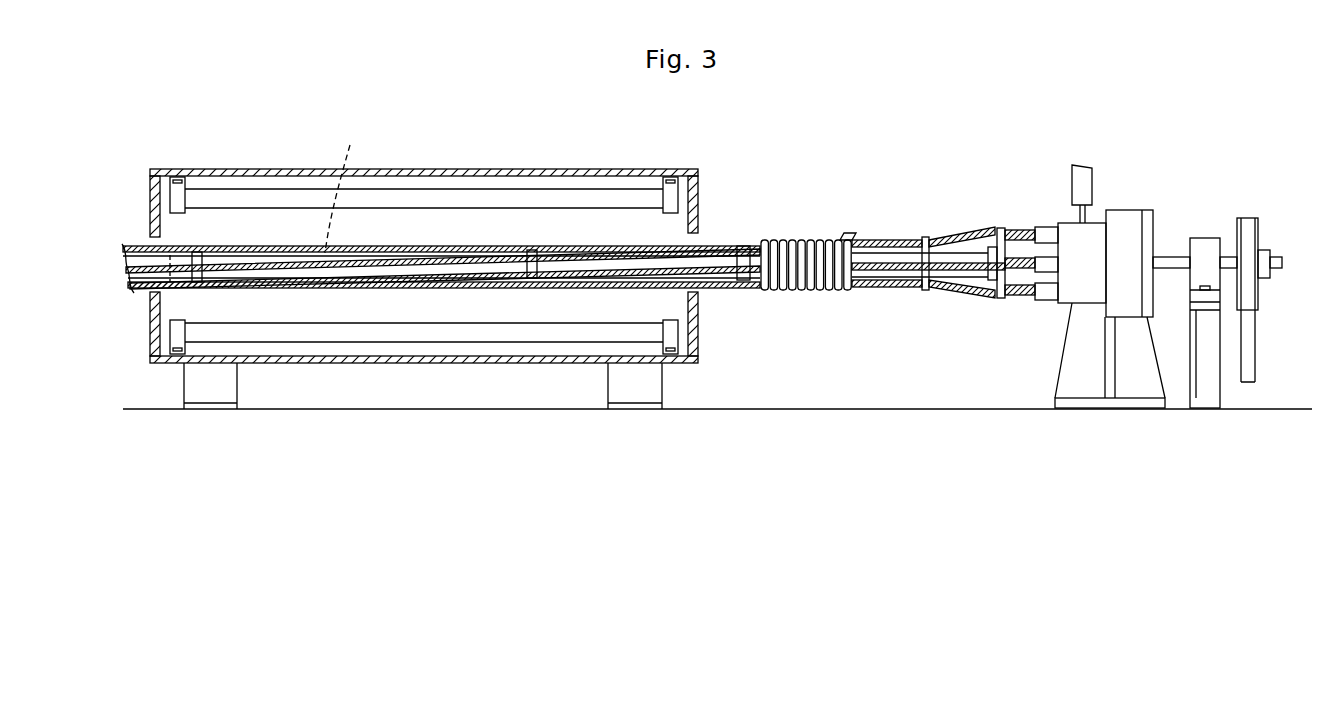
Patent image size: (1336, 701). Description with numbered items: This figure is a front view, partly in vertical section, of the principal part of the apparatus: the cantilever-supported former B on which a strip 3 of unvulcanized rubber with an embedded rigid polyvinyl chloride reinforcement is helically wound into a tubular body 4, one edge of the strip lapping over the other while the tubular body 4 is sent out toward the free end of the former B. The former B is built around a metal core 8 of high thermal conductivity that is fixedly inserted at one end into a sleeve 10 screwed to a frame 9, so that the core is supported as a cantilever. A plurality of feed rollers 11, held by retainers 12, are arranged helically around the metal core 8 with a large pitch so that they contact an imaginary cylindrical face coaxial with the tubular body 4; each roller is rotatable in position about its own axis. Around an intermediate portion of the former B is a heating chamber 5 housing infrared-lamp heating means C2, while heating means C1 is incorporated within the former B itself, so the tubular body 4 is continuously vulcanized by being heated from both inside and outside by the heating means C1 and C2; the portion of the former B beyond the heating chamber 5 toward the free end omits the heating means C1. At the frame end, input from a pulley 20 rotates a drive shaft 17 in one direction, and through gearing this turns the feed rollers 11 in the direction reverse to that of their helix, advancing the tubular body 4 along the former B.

The strip 3 is at (848, 232).
The tubular body 4 is at (807, 293).
The heating chamber 5 is at (424, 266).
The metal core 8 is at (948, 273).
The frame 9 is at (1067, 357).
The sleeve 10 is at (1023, 230).
The feed rollers 11 is at (563, 311).
The retainers 12 is at (530, 248).
The drive shaft 17 is at (1173, 260).
The pulley 20 is at (1262, 228).
The former B is at (376, 284).
The heating means C1 is at (261, 203).
The heating means C2 is at (548, 198).